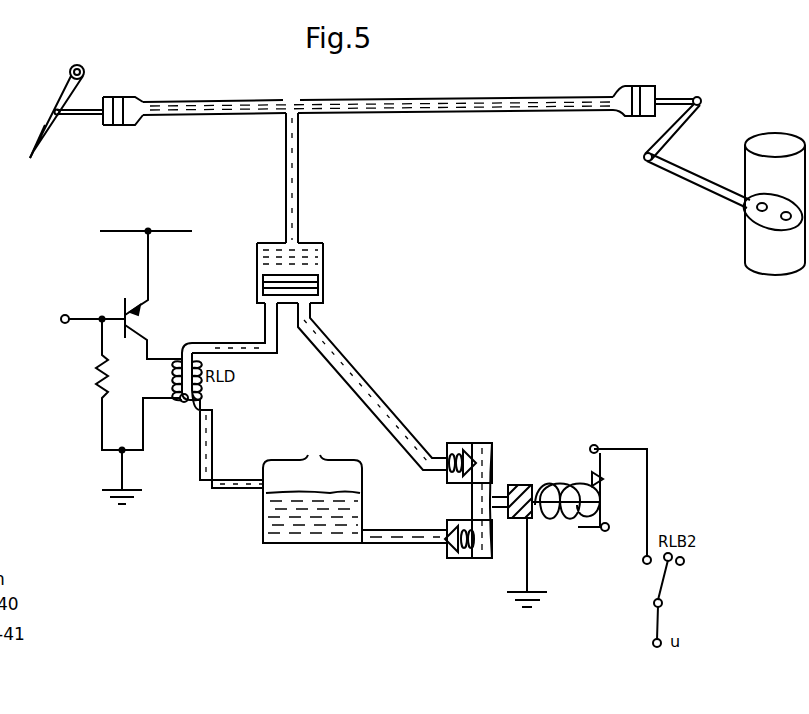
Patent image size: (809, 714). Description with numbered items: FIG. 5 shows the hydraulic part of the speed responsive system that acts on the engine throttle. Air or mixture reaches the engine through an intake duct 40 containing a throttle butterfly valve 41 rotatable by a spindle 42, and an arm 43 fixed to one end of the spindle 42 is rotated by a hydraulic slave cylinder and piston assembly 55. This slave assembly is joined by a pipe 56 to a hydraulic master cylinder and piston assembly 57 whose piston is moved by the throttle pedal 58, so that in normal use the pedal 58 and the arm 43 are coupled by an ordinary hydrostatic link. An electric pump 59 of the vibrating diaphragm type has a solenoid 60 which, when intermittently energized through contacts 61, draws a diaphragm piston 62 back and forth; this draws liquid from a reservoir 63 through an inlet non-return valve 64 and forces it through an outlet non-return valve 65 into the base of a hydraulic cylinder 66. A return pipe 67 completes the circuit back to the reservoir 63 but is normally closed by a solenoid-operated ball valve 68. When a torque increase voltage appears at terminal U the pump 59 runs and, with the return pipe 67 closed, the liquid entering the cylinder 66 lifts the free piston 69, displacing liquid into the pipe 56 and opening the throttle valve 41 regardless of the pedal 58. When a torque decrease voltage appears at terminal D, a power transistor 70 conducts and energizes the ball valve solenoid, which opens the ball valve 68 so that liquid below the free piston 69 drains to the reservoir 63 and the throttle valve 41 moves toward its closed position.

The intake duct 40 is at (765, 142).
The throttle butterfly valve 41 is at (760, 224).
The spindle 42 is at (690, 176).
The arm 43 is at (683, 119).
The hydraulic slave cylinder and piston assembly 55 is at (620, 122).
The pipe 56 is at (421, 113).
The hydraulic master cylinder and piston assembly 57 is at (135, 97).
The throttle pedal 58 is at (70, 80).
The electric pump 59 is at (535, 452).
The solenoid 60 is at (550, 528).
The contacts 61 is at (605, 482).
The diaphragm piston 62 is at (490, 487).
The reservoir 63 is at (334, 545).
The inlet non-return valve 64 is at (462, 558).
The outlet non-return valve 65 is at (465, 446).
The hydraulic cylinder 66 is at (323, 256).
The return pipe 67 is at (212, 432).
The solenoid-operated ball valve 68 is at (184, 410).
The free piston 69 is at (320, 280).
The power transistor 70 is at (124, 303).